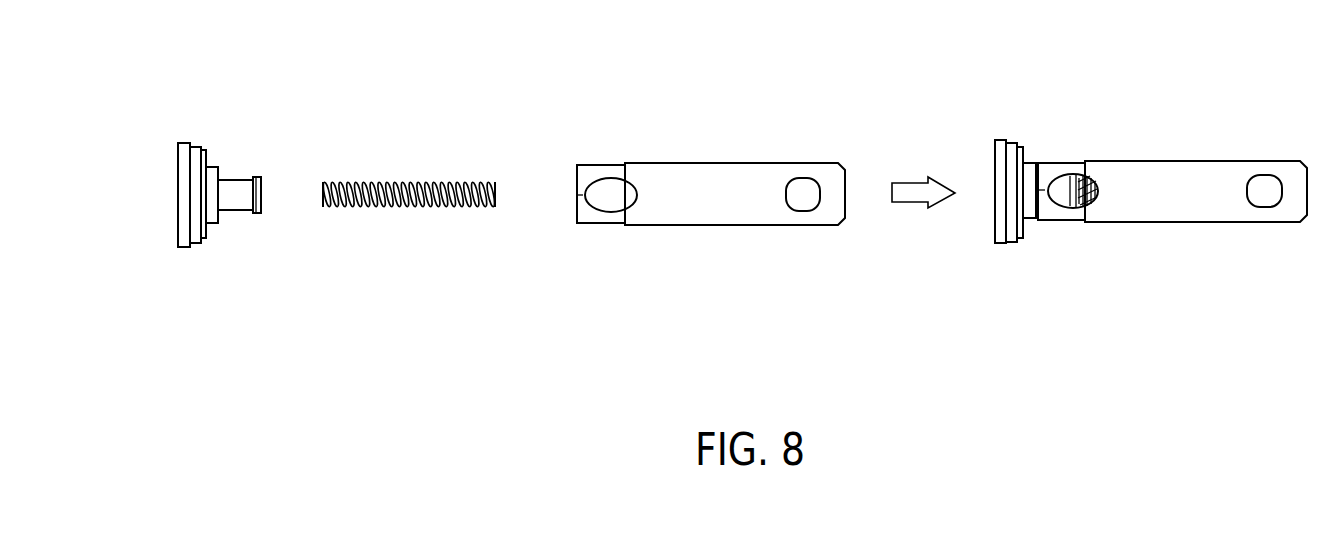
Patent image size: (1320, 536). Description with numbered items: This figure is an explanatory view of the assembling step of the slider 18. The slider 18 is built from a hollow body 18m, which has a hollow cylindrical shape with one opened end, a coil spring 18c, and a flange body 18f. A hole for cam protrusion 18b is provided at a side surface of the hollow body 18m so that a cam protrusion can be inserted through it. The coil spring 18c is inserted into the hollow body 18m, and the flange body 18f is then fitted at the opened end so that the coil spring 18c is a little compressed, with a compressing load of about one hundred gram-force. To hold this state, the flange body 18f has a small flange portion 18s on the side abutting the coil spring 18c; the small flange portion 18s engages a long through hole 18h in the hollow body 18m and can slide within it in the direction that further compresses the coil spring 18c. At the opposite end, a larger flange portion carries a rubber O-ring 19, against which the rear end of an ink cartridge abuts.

The slider 18 is at (1214, 237).
The hole for cam protrusion 18b is at (805, 178).
The coil spring 18c is at (405, 180).
The flange body 18f is at (178, 195).
The long through hole 18h is at (611, 213).
The hollow body 18m is at (713, 163).
The small flange portion 18s is at (262, 197).
The O-ring 19 is at (195, 142).